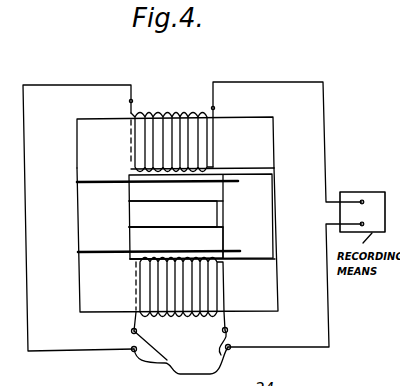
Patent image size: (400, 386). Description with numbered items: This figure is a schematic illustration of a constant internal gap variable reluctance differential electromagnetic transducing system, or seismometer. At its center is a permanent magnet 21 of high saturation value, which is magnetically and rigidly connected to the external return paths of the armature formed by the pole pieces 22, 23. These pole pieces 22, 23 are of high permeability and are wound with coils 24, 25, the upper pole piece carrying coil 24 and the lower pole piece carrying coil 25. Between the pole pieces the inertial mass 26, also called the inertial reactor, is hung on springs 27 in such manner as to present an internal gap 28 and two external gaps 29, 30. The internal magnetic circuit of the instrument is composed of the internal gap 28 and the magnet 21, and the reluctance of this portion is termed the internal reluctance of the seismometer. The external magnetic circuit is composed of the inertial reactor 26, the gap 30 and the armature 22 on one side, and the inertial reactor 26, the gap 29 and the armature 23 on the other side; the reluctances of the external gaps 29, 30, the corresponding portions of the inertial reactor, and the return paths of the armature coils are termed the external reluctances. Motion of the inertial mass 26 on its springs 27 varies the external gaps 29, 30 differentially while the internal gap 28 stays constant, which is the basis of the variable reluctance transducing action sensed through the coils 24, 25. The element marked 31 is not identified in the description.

The permanent magnet 21 is at (173, 214).
The pole piece 22 is at (175, 143).
The pole piece 23 is at (177, 240).
The coil 24 is at (172, 113).
The coil 25 is at (186, 316).
The inertial mass 26 is at (201, 216).
The springs 27 is at (187, 181).
The internal gap 28 is at (221, 230).
The external gap 29 is at (273, 258).
The external gap 30 is at (273, 173).
The terminals of recording means 31 is at (370, 207).